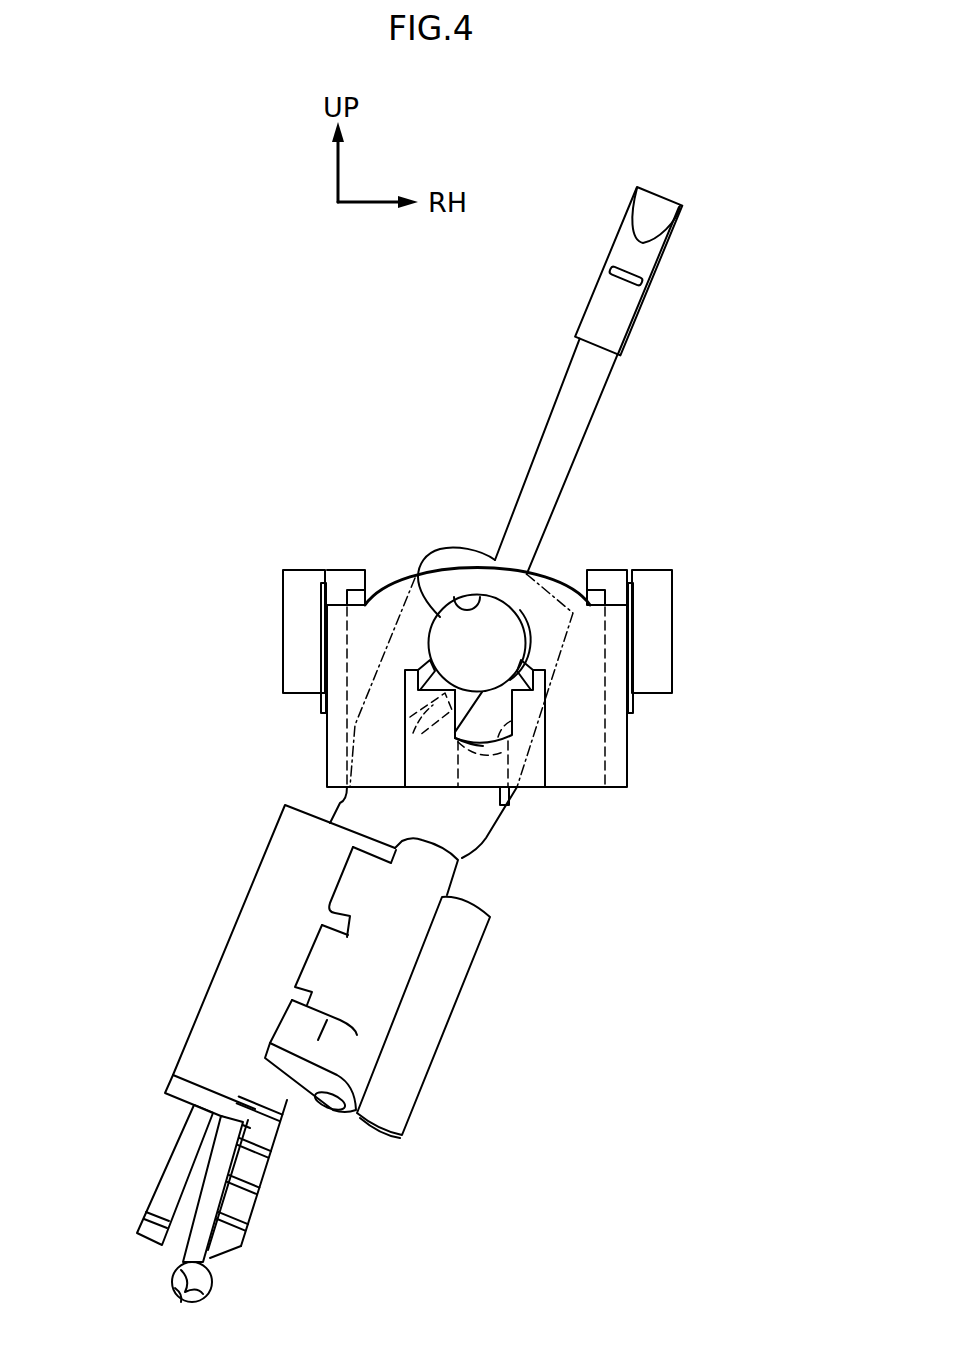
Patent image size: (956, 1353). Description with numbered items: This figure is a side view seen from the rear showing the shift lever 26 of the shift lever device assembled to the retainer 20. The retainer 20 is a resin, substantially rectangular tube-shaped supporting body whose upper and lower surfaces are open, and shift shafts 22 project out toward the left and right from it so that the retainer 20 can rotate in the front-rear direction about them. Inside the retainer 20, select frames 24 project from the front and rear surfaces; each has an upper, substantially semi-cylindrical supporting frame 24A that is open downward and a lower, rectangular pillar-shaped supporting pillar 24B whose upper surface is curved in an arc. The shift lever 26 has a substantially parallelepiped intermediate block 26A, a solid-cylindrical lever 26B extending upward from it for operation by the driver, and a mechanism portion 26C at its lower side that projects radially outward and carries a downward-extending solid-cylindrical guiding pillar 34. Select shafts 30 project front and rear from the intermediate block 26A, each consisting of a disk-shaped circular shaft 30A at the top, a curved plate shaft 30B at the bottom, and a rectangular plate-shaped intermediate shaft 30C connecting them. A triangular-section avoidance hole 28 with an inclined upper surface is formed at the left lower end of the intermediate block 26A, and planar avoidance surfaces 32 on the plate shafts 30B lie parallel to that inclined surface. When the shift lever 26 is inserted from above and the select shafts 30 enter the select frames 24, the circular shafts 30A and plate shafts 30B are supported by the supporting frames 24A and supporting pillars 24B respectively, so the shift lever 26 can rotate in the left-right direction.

The retainer 20 is at (333, 568).
The shift shafts 22 is at (283, 603).
The select frames 24 is at (503, 752).
The supporting frames 24A is at (457, 597).
The supporting pillars 24B is at (512, 735).
The shift lever 26 is at (598, 265).
The intermediate block 26A is at (432, 546).
The lever 26B is at (608, 393).
The mechanism portion 26C is at (463, 988).
The avoidance hole 28 is at (343, 793).
The select shafts 30 is at (438, 613).
The circular shafts 30A is at (527, 622).
The plate shafts 30B is at (413, 733).
The intermediate shafts 30C is at (458, 728).
The avoidance surfaces 32 is at (456, 736).
The guiding pillar 34 is at (168, 1155).